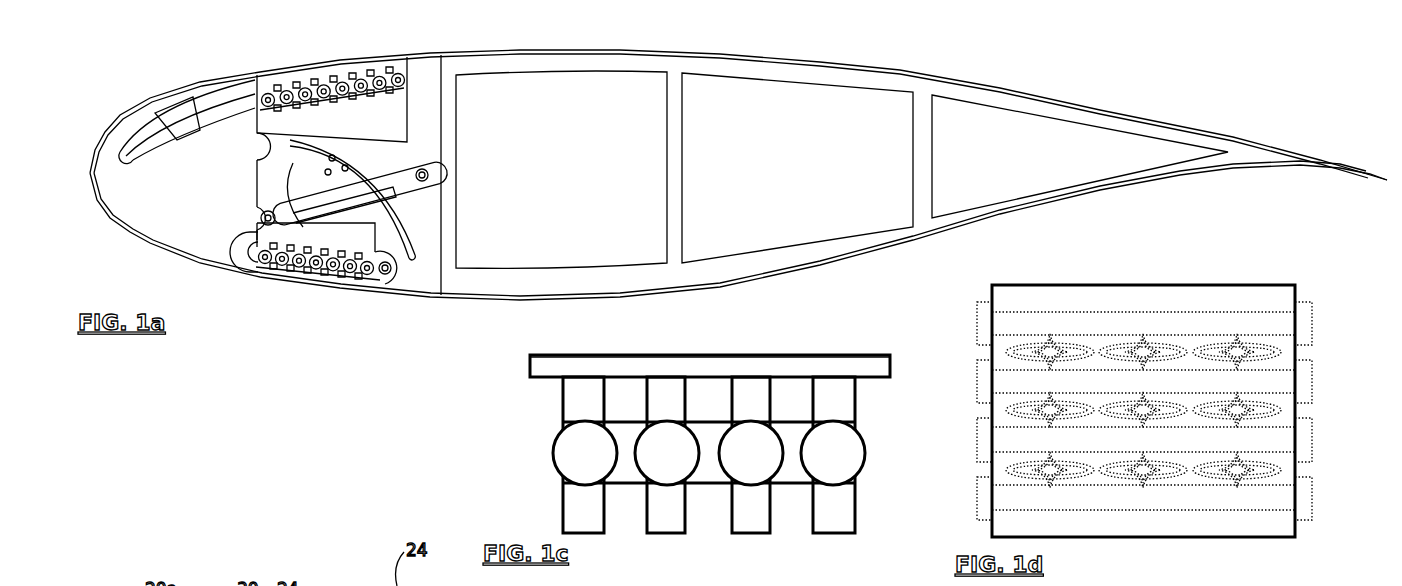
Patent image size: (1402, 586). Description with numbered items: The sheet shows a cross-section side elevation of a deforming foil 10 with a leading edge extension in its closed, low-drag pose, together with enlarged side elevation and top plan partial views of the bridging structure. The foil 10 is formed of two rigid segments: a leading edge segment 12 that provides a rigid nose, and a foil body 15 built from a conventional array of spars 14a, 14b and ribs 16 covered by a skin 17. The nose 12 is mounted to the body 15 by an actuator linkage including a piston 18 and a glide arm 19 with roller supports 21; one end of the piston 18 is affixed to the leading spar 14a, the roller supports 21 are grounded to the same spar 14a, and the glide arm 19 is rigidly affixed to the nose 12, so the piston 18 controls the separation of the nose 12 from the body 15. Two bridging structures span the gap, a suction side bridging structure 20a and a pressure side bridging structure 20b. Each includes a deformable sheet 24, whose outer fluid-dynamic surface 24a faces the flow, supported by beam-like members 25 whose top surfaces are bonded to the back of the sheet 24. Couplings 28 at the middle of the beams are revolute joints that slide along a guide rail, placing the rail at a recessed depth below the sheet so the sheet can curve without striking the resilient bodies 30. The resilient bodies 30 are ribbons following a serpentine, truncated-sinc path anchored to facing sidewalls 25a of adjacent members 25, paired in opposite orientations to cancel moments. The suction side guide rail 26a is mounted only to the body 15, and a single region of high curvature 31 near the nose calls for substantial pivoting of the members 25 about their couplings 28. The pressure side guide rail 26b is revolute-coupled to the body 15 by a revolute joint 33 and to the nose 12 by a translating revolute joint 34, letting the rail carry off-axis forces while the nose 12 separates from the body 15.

In FIG. 1a, the foil 10 is at (142, 47).
In FIG. 1a, the leading edge segment 12 is at (187, 148).
In FIG. 1a, the leading spar 14a is at (452, 236).
In FIG. 1a, the spar 14b is at (913, 150).
In FIG. 1a, the foil body 15 is at (561, 169).
In FIG. 1a, the ribs 16 is at (735, 72).
In FIG. 1a, the skin 17 is at (935, 72).
In FIG. 1a, the piston 18 is at (400, 160).
In FIG. 1a, the glide arm 19 is at (412, 250).
In FIG. 1a, the suction side bridging structure 20a is at (258, 66).
In FIG. 1a, the pressure side bridging structure 20b is at (270, 313).
In FIG. 1a, the roller supports 21 is at (341, 191).
In FIG. 1a, the deformable sheet 24 is at (380, 56).
In FIG. 1c, the deformable sheet 24 is at (550, 362).
In FIG. 1d, the deformable sheet 24 is at (1143, 411).
In FIG. 1a, the fluid-dynamic surface 24a is at (256, 86).
In FIG. 1c, the fluid-dynamic surface 24a is at (690, 354).
In FIG. 1a, the members 25 is at (391, 104).
In FIG. 1c, the members 25 is at (709, 455).
In FIG. 1d, the members 25 is at (1143, 411).
In FIG. 1a, the facing sidewalls 25a is at (270, 117).
In FIG. 1c, the facing sidewalls 25a is at (728, 517).
In FIG. 1d, the facing sidewalls 25a is at (1270, 420).
In FIG. 1a, the guide rail of the suction side bridging structure 26a is at (222, 118).
In FIG. 1a, the guide rail of the pressure side bridging structure 26b is at (213, 237).
In FIG. 1a, the couplings 28 is at (306, 104).
In FIG. 1c, the couplings 28 is at (709, 453).
In FIG. 1d, the couplings 28 is at (975, 328).
In FIG. 1a, the resilient bodies 30 is at (301, 88).
In FIG. 1c, the resilient bodies 30 is at (787, 438).
In FIG. 1d, the resilient bodies 30 is at (1200, 465).
In FIG. 1a, the region of high curvature 31 is at (177, 127).
In FIG. 1a, the revolute joint 33 is at (388, 260).
In FIG. 1a, the translating revolute joint 34 is at (248, 258).